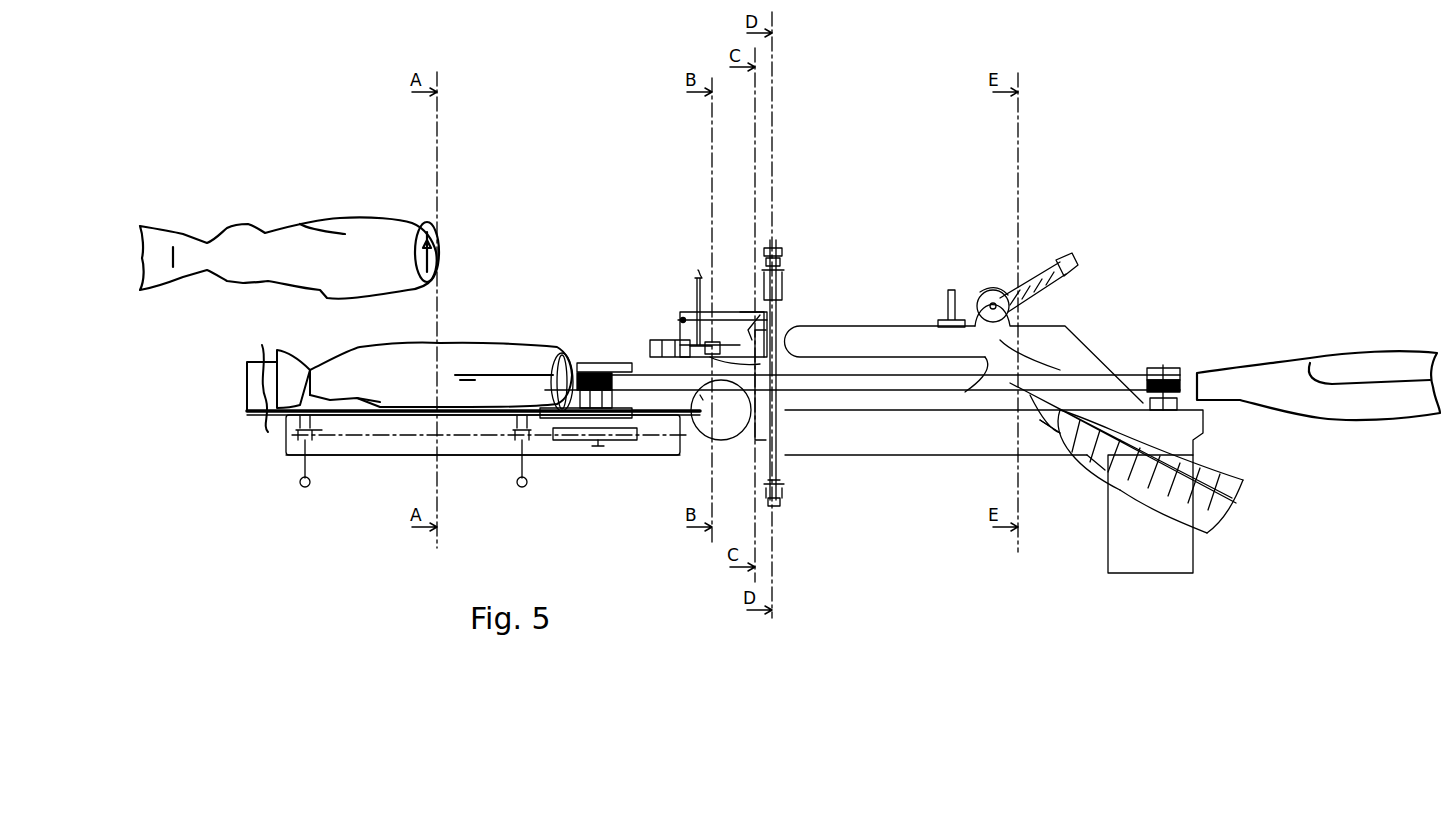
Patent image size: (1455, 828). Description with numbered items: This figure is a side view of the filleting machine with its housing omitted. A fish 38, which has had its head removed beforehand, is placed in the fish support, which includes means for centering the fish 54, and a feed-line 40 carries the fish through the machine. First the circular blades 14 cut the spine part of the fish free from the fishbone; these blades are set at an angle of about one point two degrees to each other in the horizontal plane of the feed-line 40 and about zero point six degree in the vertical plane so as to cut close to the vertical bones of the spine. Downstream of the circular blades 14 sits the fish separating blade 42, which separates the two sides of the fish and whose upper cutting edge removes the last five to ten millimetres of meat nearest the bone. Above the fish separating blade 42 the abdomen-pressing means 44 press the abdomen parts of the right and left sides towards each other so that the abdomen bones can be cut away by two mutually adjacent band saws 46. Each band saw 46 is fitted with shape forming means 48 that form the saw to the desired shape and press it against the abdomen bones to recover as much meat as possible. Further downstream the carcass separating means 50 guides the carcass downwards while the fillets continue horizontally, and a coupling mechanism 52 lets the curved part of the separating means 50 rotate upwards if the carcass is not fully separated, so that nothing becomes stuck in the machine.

The circular blades 14 is at (700, 396).
The fish 38 is at (514, 410).
The feed-line 40 is at (650, 390).
The fish separating blade 42 is at (748, 325).
The abdomen-pressing means 44 is at (755, 315).
The band saws 46 is at (787, 238).
The shape forming means 48 is at (780, 273).
The carcass separating means 50 is at (1058, 348).
The coupling mechanism 52 is at (1012, 296).
The means for centering the fish 54 is at (521, 407).